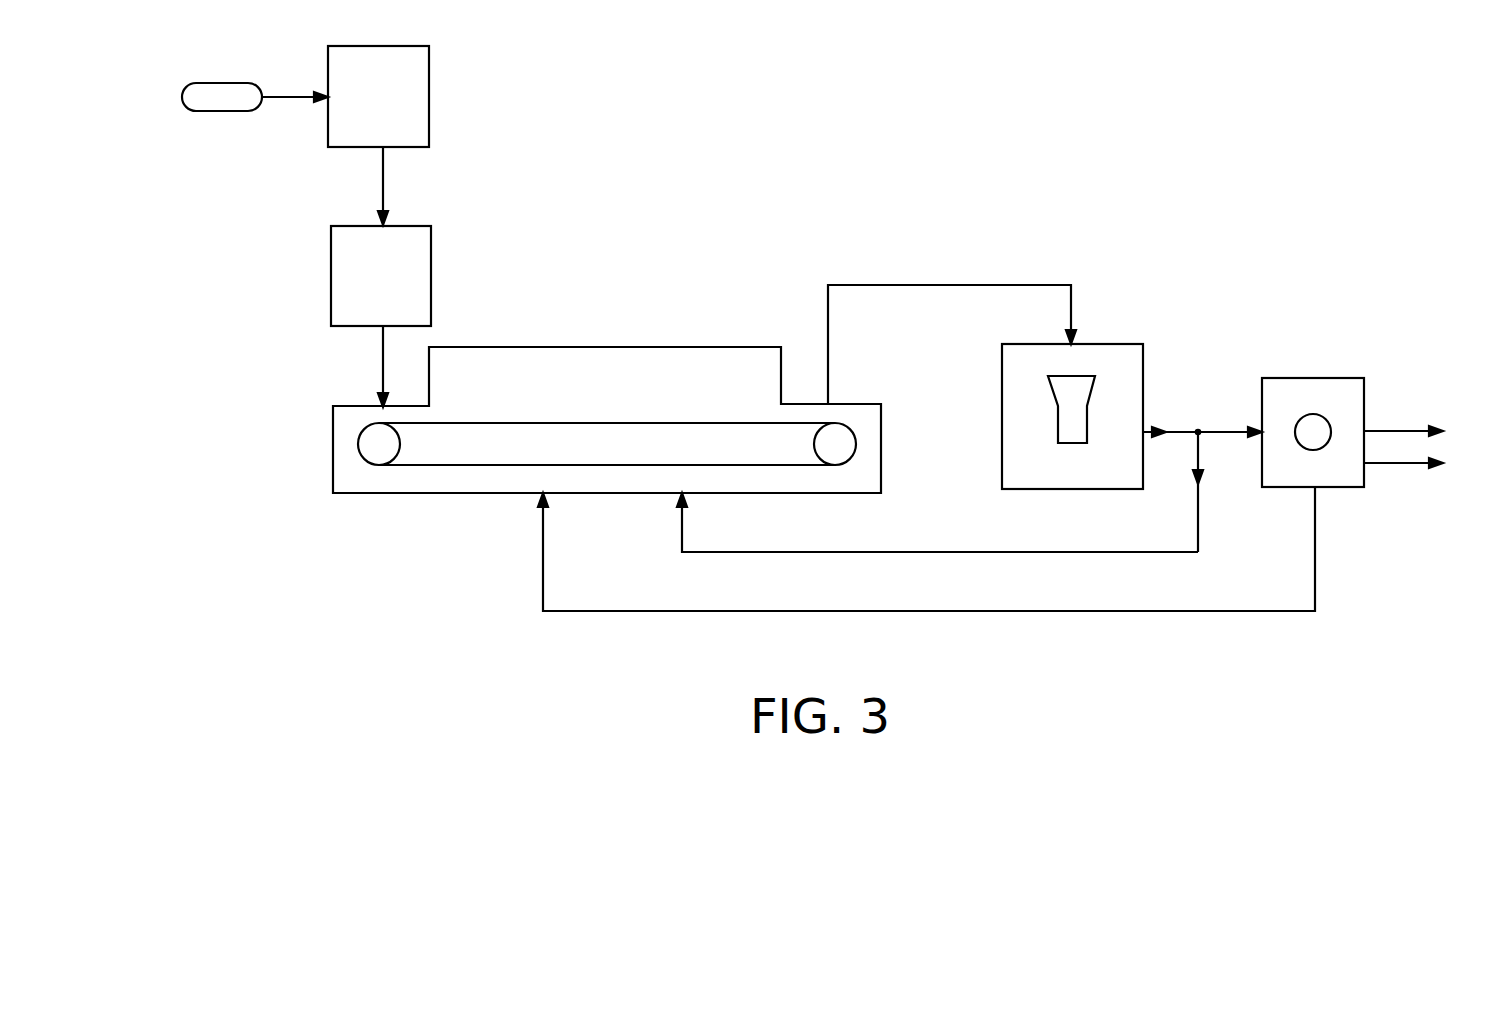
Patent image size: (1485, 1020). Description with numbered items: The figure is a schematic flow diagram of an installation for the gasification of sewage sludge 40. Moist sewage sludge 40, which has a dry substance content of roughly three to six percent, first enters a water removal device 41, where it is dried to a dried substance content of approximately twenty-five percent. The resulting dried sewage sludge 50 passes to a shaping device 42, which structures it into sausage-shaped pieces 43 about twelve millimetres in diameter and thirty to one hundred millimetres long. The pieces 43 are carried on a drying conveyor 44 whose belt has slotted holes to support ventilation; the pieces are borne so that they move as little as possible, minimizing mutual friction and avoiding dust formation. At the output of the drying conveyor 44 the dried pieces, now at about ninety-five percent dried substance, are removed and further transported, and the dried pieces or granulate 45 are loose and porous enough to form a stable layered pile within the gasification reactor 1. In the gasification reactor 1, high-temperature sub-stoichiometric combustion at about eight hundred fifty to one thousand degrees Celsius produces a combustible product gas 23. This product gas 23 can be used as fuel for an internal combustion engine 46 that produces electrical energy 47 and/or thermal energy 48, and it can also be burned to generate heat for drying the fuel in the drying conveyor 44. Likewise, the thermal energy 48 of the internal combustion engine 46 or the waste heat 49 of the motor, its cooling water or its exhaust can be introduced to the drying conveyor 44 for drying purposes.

The gasification reactor 1 is at (1132, 326).
The product gas 23 is at (1188, 432).
The sewage sludge 40 is at (225, 100).
The water removal device 41 is at (413, 95).
The shaping device 42 is at (348, 268).
The sausage-shaped pieces 43 is at (383, 350).
The drying conveyor 44 is at (573, 330).
The granulate 45 is at (943, 285).
The internal combustion engine 46 is at (1340, 378).
The electrical energy 47 is at (1385, 428).
The thermal energy 48 is at (1390, 465).
The waste heat 49 is at (1218, 613).
The dried sewage sludge 50 is at (383, 172).